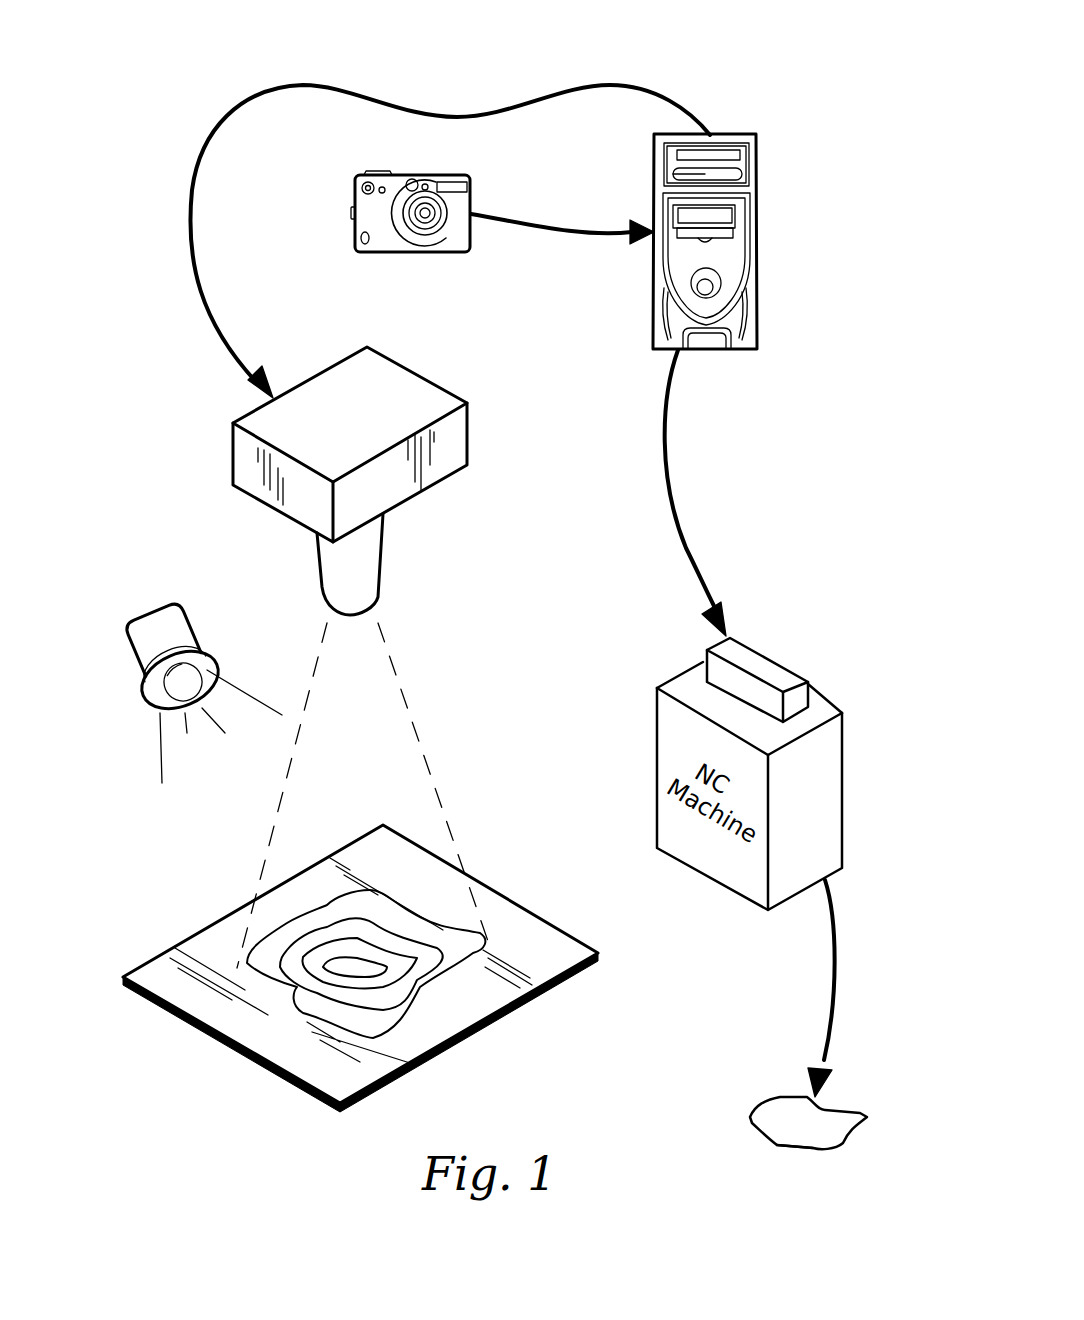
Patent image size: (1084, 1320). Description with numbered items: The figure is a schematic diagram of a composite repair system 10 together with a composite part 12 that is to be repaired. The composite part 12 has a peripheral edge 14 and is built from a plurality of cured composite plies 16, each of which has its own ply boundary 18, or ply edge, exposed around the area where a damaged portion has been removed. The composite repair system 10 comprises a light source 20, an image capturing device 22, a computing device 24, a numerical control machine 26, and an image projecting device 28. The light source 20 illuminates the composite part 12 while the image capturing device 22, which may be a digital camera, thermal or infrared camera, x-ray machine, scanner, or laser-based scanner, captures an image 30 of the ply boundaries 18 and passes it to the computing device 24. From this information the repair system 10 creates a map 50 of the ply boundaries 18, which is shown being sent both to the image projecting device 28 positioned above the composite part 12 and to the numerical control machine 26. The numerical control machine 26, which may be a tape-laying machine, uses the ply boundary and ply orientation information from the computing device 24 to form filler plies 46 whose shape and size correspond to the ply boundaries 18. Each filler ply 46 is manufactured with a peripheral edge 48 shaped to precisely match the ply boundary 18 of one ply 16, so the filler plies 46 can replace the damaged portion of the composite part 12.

The composite repair system 10 is at (148, 88).
The composite part 12 is at (243, 1030).
The peripheral edge 14 is at (223, 917).
The cured composite plies 16 is at (310, 927).
The ply boundary 18 is at (440, 970).
The light source 20 is at (145, 610).
The image capturing device 22 is at (355, 184).
The computing device 24 is at (752, 257).
The numerical control (NC) machine 26 is at (777, 678).
The image projecting device 28 is at (405, 385).
The image 30 is at (575, 203).
The filler plies 46 is at (787, 1108).
The peripheral edge 48 is at (772, 1142).
The map 50 is at (440, 82).